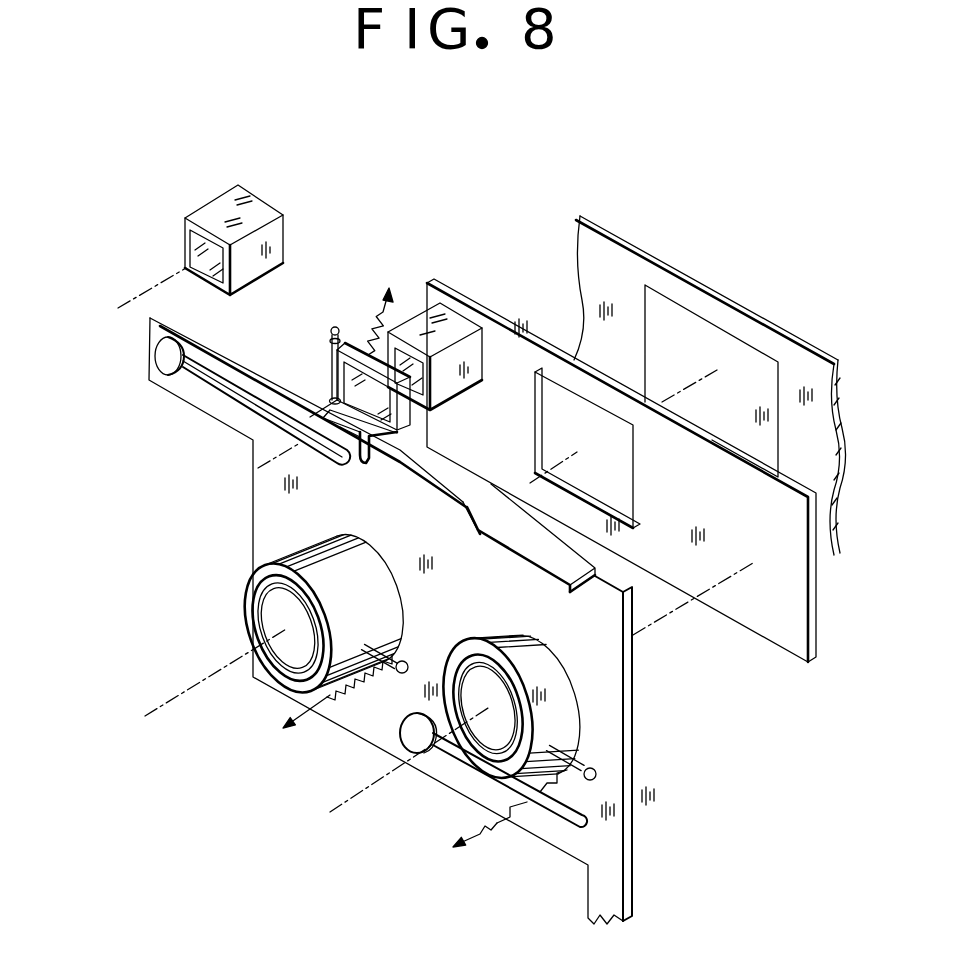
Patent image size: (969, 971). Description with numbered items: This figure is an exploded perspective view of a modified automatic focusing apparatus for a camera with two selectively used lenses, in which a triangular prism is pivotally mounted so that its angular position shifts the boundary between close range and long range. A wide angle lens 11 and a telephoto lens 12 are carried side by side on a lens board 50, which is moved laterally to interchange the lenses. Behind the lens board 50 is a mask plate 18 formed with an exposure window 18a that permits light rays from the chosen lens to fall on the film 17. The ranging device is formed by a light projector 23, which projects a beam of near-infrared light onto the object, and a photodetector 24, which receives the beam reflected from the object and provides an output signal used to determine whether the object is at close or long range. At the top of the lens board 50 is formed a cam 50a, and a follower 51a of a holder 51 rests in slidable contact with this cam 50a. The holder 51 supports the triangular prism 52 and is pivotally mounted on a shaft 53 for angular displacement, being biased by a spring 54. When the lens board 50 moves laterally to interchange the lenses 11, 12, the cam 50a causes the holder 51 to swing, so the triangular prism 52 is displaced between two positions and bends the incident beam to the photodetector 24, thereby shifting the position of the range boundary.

The wide angle lens 11 is at (537, 655).
The telephoto lens 12 is at (300, 552).
The film 17 is at (800, 363).
The mask plate 18 is at (787, 632).
The exposure window 18a is at (624, 485).
The light projector 23 is at (255, 212).
The photodetector 24 is at (447, 318).
The lens board 50 is at (607, 712).
The cam 50a is at (498, 545).
The holder 51 is at (408, 413).
The follower 51a is at (387, 447).
The triangular prism 52 is at (336, 380).
The shaft 53 is at (333, 333).
The spring 54 is at (367, 355).